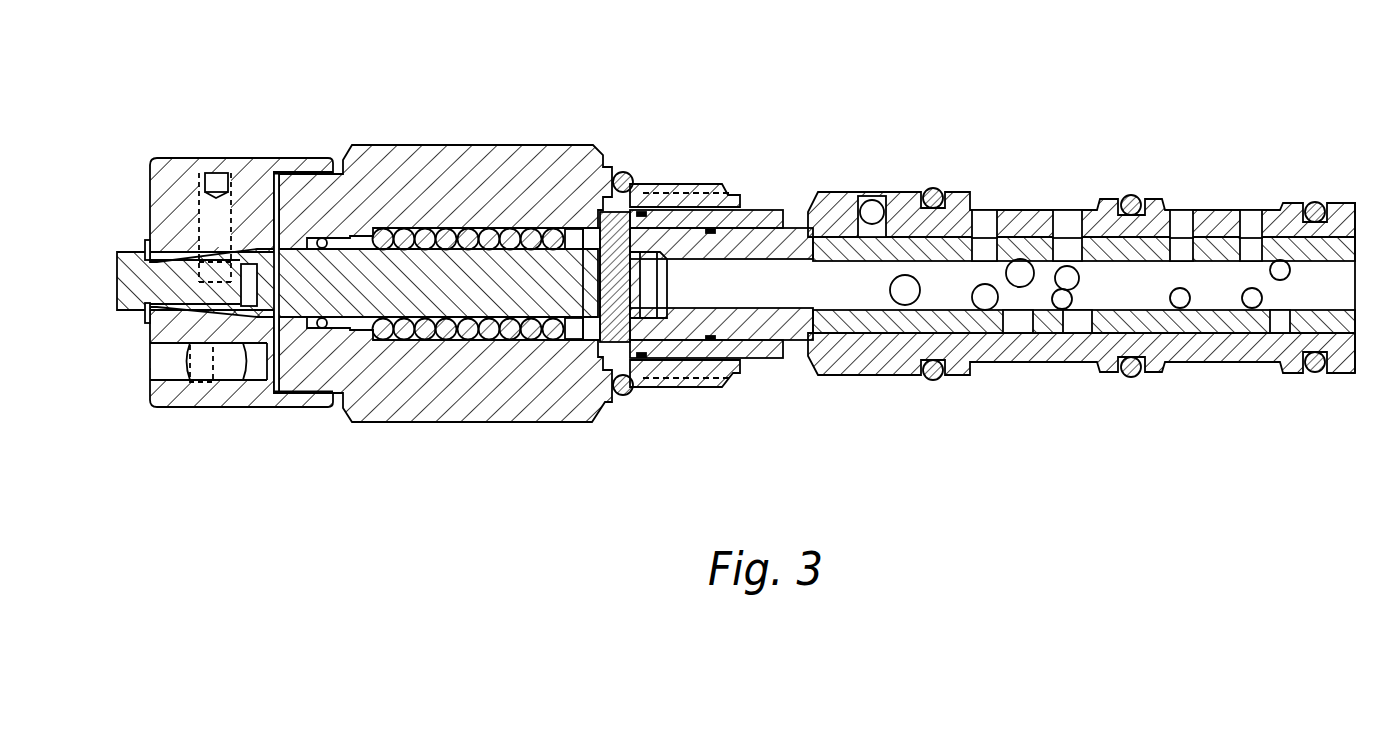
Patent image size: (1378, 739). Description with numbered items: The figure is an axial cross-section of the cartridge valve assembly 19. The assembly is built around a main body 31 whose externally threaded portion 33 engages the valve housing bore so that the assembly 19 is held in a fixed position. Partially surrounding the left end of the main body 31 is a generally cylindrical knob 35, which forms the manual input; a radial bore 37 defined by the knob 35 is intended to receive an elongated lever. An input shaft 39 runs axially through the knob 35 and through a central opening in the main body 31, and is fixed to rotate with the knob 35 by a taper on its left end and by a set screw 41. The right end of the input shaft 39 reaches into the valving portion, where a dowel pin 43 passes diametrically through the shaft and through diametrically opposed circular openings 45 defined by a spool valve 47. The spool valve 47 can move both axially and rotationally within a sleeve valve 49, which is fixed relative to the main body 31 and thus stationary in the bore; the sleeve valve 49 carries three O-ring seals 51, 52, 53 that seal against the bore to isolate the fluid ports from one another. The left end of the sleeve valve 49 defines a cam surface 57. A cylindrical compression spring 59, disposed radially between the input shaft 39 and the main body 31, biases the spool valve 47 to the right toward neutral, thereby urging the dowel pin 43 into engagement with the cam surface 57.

The cartridge valve assembly 19 is at (927, 127).
The main body 31 is at (418, 398).
The externally threaded portion 33 is at (693, 388).
The knob 35 is at (167, 168).
The bore 37 is at (225, 390).
The input shaft 39 is at (313, 297).
The set screw 41 is at (218, 170).
The dowel pin 43 is at (621, 262).
The circular openings 45 is at (612, 232).
The spool valve 47 is at (770, 227).
The sleeve valve 49 is at (887, 355).
The O-ring seal 51 is at (935, 380).
The O-ring seal 52 is at (1133, 375).
The O-ring seal 53 is at (1315, 375).
The cam surface 57 is at (642, 268).
The compression spring 59 is at (480, 228).